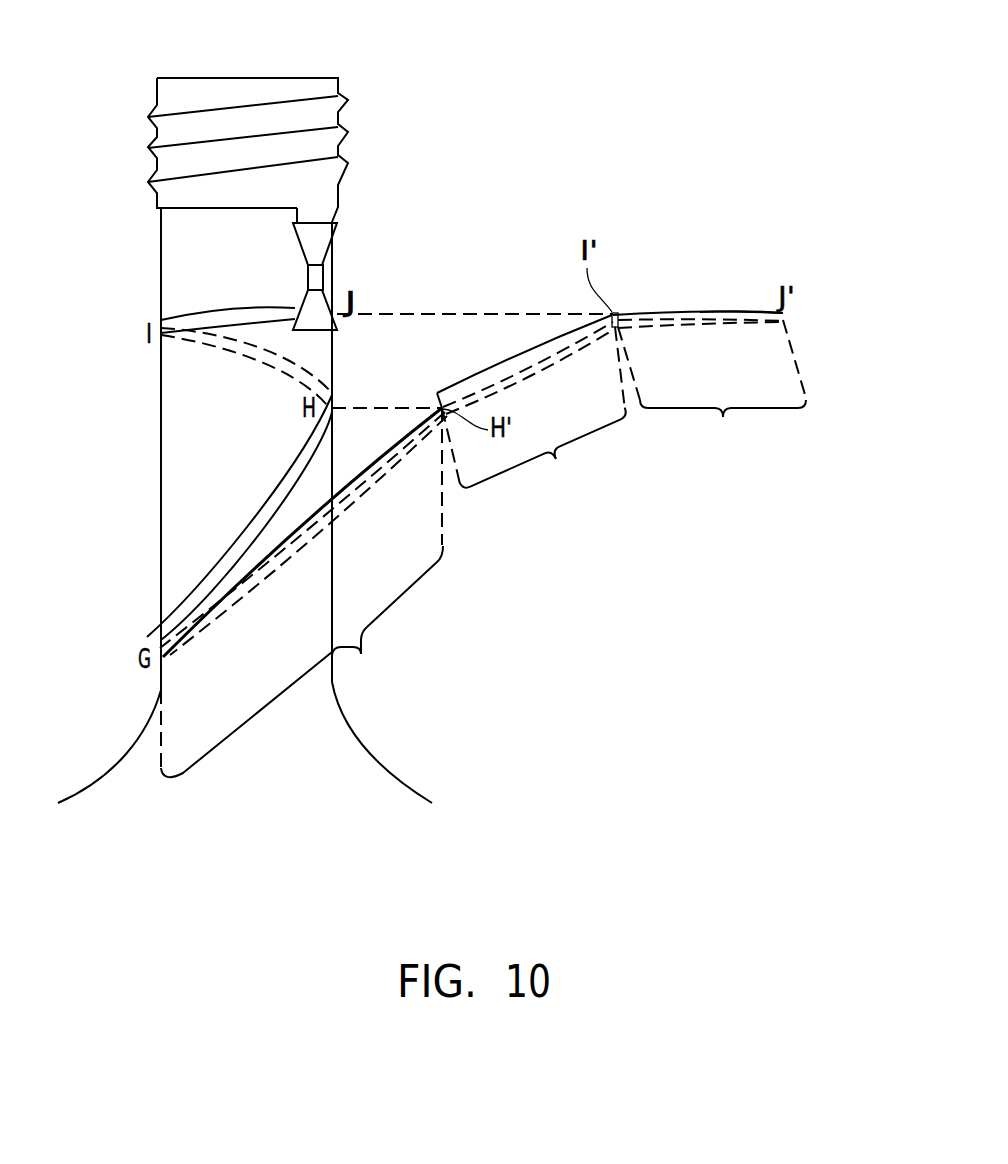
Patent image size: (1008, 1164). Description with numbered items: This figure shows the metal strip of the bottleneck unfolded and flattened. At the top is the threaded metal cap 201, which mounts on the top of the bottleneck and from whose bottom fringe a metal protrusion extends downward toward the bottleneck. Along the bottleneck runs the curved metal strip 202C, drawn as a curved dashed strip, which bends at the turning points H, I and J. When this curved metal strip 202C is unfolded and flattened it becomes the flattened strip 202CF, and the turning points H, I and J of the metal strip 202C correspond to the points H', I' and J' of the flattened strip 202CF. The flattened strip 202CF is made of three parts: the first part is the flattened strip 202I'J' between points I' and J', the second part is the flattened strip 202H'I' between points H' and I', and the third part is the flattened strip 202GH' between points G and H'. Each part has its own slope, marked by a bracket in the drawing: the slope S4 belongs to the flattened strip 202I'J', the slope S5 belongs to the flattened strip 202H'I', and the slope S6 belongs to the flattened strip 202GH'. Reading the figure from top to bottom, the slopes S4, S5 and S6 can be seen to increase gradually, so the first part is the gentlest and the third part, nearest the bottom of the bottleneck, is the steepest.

The metal cap 201 is at (248, 90).
The metal strip 202C is at (265, 517).
The flattened strip 202CF is at (804, 326).
The flattened strip 202GH' is at (387, 614).
The flattened strip 202H'I' is at (543, 455).
The flattened strip 202I'J' is at (723, 427).
The slope S4 is at (698, 301).
The slope S5 is at (525, 364).
The slope S6 is at (303, 532).